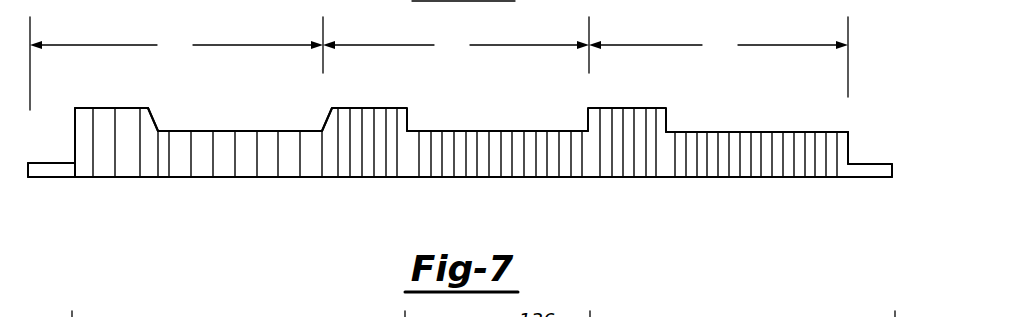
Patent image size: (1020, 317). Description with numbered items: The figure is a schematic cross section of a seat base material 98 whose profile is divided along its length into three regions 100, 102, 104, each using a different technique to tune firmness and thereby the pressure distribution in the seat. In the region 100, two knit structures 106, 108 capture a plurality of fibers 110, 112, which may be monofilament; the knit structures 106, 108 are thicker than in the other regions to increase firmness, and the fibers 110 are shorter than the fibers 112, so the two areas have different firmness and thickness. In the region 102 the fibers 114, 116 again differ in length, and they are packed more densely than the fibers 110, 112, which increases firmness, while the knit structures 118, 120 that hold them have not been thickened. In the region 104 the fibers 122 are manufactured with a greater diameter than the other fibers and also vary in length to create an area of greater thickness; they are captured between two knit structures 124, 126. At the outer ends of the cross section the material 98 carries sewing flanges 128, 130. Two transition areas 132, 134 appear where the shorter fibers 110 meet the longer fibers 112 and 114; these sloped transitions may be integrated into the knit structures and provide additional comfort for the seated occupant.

The material 98 is at (645, 33).
The region 100 is at (176, 63).
The region 102 is at (456, 45).
The region 104 is at (718, 57).
The knit structure 106 is at (108, 107).
The knit structure 108 is at (103, 178).
The fibers 110 is at (192, 172).
The fibers 112 is at (115, 162).
The fibers 114 is at (363, 172).
The fibers 116 is at (517, 172).
The knit structure 118 is at (500, 130).
The knit structure 120 is at (479, 178).
The fibers 122 is at (700, 165).
The knit structure 124 is at (764, 131).
The knit structure 126 is at (787, 178).
The sewing flange 128 is at (63, 162).
The sewing flange 130 is at (860, 163).
The transition area 132 is at (155, 119).
The transition area 134 is at (327, 119).